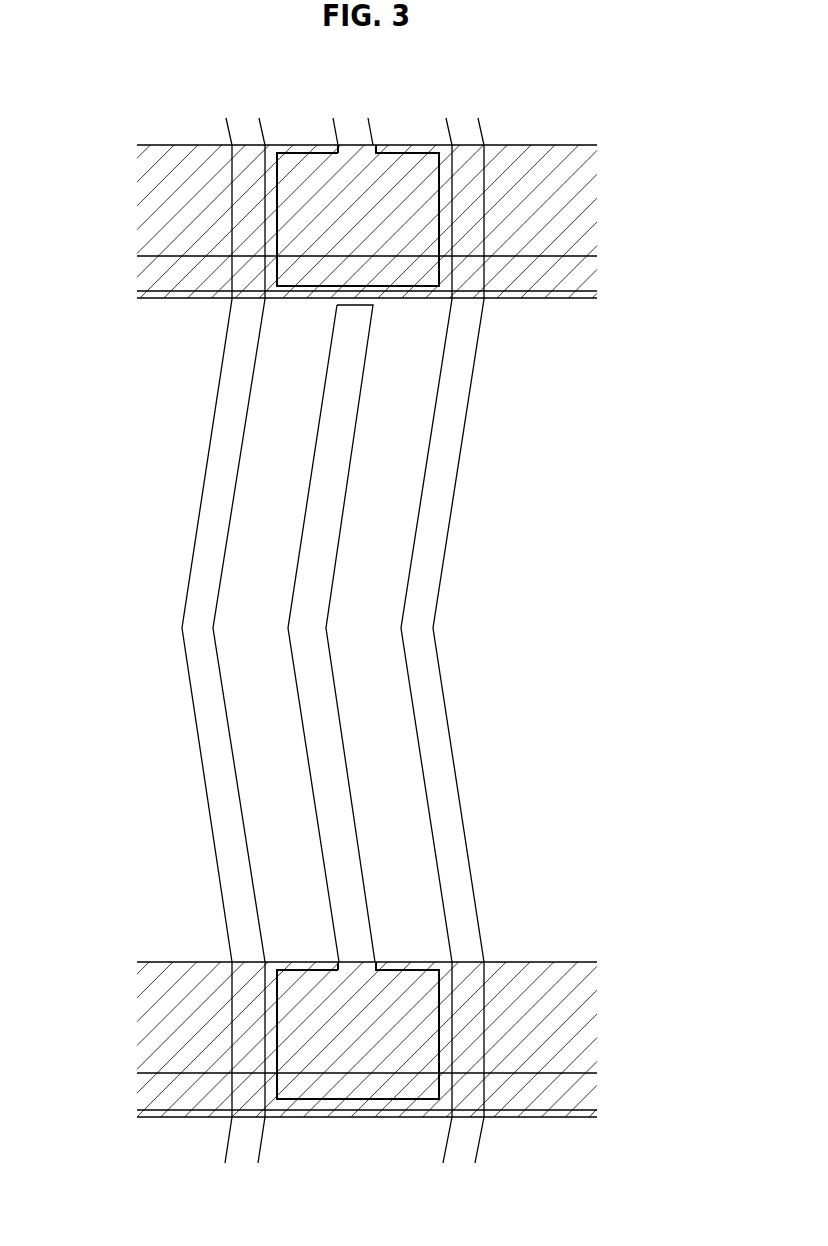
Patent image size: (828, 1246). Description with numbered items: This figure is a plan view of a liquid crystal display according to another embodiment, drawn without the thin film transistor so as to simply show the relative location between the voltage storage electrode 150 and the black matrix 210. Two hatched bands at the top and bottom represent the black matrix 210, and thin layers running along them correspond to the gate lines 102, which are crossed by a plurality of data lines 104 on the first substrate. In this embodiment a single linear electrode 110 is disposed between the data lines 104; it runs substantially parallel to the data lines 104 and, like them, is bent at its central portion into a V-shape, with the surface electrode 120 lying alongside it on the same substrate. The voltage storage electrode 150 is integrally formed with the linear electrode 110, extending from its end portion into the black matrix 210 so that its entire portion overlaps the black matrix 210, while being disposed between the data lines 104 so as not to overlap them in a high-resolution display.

The gate line 102 is at (153, 295).
The data line 104 is at (196, 526).
The linear electrode 110 is at (348, 493).
The surface electrode 120 is at (367, 572).
The voltage storage electrode 150 is at (393, 150).
The black matrix 210 is at (555, 202).